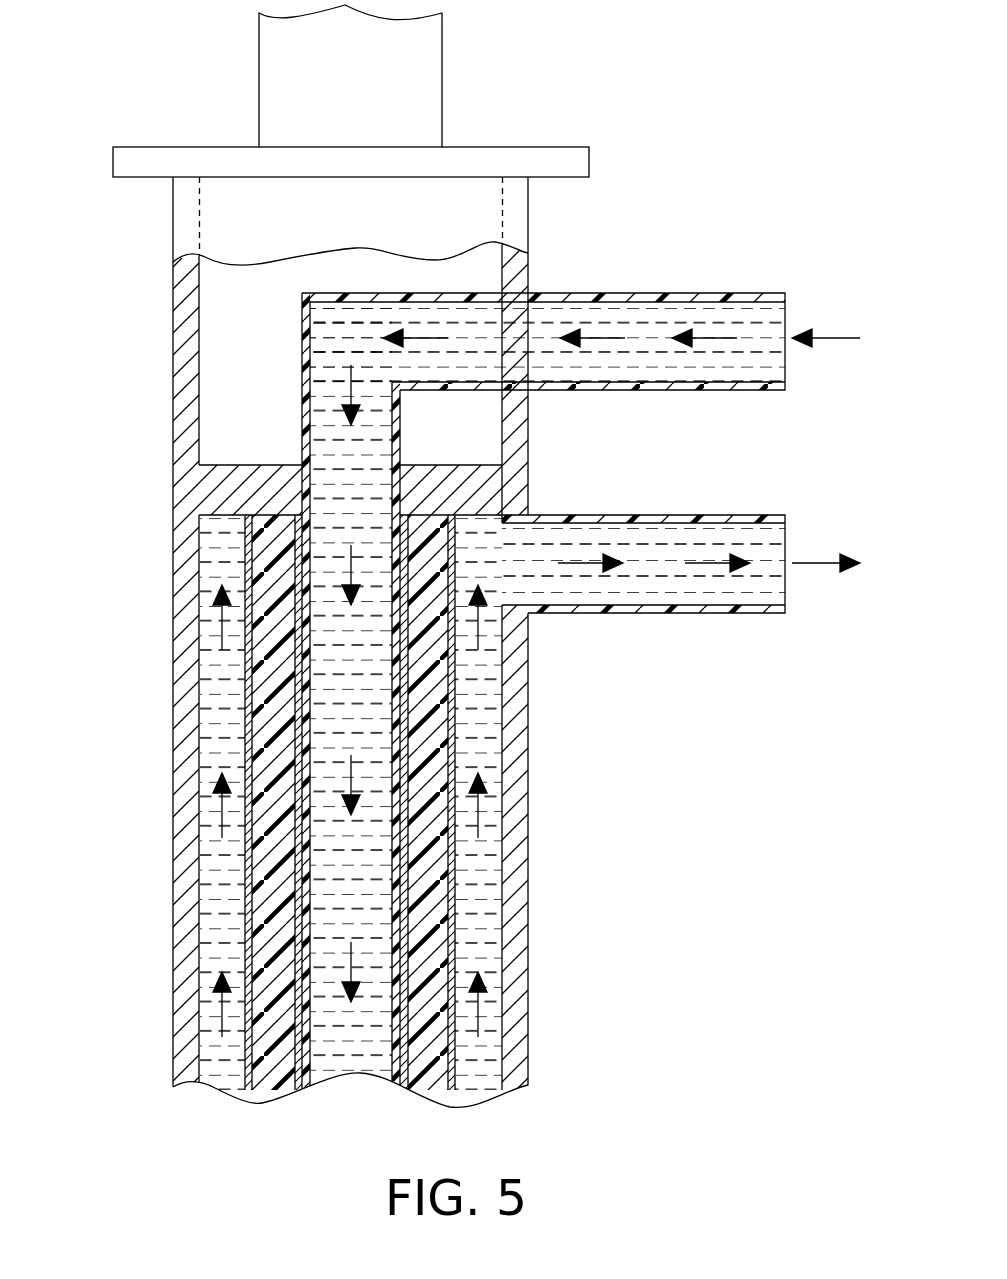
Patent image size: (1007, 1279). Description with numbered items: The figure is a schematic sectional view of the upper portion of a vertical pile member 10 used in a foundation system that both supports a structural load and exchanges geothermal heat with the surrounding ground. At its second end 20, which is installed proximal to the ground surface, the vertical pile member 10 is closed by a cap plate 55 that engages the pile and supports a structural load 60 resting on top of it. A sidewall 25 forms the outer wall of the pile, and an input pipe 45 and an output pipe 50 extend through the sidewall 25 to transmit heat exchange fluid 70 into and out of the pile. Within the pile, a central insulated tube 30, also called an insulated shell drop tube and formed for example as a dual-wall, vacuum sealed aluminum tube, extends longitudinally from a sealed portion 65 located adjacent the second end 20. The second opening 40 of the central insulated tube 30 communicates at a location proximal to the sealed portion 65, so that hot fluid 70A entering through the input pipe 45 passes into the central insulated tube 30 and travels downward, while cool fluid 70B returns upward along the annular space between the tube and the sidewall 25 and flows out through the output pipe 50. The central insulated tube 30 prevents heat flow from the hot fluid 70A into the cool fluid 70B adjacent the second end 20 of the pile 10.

The vertical pile member 10 is at (448, 642).
The second end 20 is at (105, 245).
The sidewall 25 is at (518, 893).
The central insulated tube 30 is at (265, 735).
The second opening 40 is at (343, 520).
The input pipe 45 is at (581, 314).
The output pipe 50 is at (681, 560).
The cap plate 55 is at (529, 147).
The structural load 60 is at (238, 44).
The sealed portion 65 is at (205, 489).
The heat exchange fluid 70 is at (367, 862).
The hot fluid 70A is at (687, 310).
The cool fluid 70B is at (687, 594).